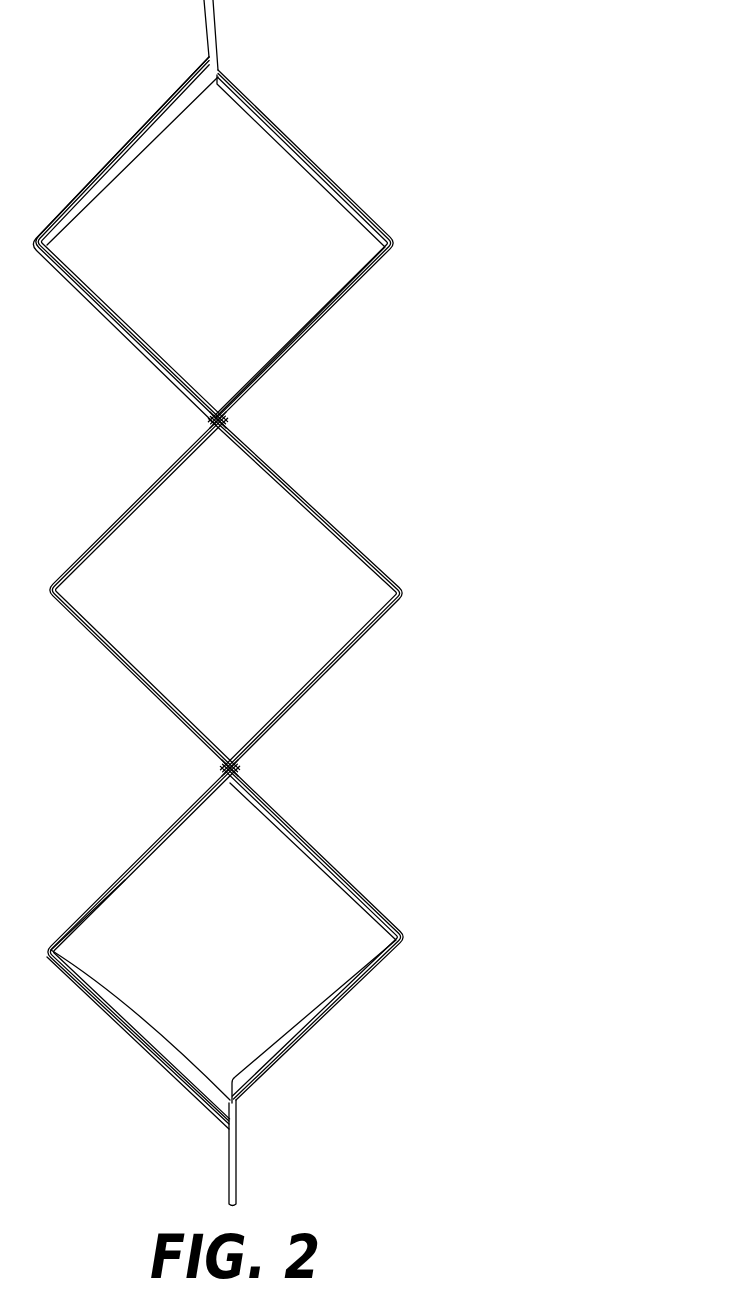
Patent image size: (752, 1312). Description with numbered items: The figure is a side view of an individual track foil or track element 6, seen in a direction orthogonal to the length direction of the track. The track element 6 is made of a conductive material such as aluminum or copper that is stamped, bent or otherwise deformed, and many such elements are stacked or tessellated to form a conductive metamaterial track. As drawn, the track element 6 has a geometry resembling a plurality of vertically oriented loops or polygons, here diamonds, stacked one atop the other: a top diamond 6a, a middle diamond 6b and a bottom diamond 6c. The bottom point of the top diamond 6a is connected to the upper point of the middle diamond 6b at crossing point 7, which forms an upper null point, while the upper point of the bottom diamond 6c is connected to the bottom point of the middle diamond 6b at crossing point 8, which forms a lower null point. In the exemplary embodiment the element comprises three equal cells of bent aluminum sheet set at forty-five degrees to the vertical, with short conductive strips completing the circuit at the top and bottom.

The track element 6 is at (220, 38).
The top diamond 6a is at (213, 243).
The middle diamond 6b is at (217, 598).
The bottom diamond 6c is at (215, 956).
The crossing point 7 is at (237, 420).
The crossing point 8 is at (242, 768).